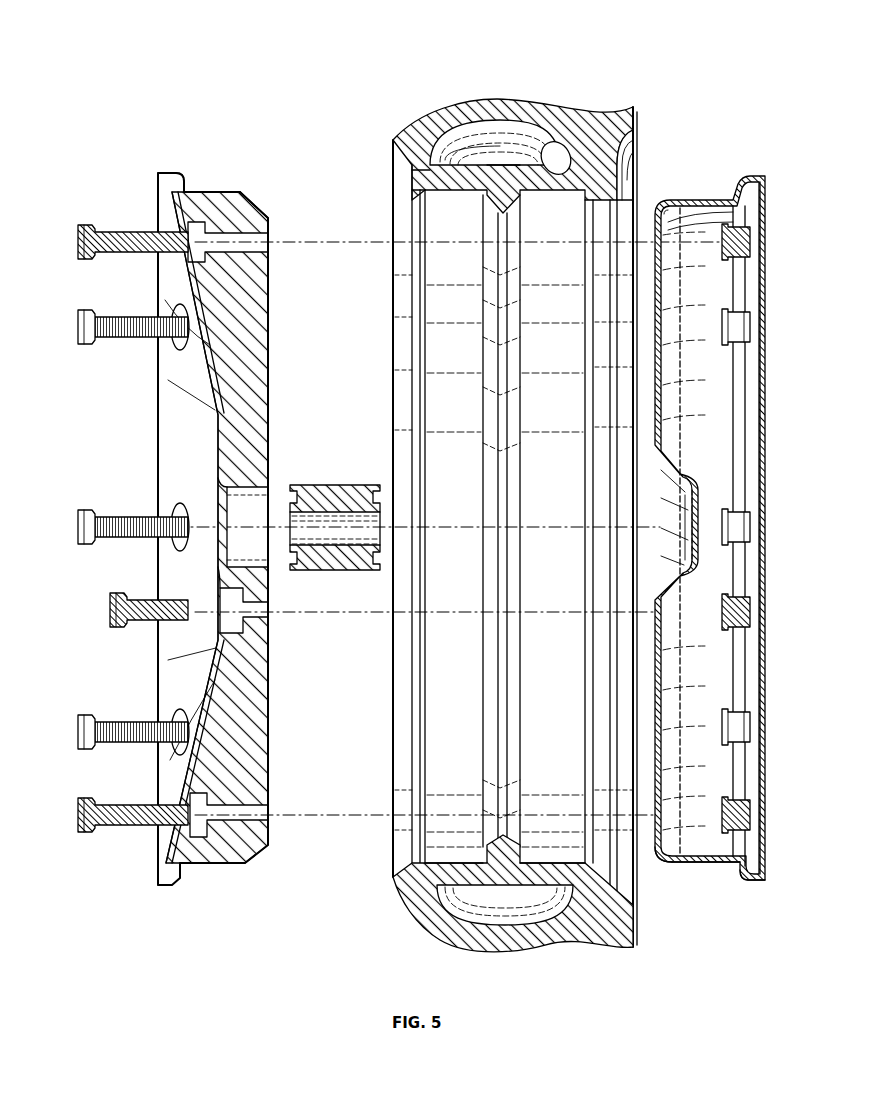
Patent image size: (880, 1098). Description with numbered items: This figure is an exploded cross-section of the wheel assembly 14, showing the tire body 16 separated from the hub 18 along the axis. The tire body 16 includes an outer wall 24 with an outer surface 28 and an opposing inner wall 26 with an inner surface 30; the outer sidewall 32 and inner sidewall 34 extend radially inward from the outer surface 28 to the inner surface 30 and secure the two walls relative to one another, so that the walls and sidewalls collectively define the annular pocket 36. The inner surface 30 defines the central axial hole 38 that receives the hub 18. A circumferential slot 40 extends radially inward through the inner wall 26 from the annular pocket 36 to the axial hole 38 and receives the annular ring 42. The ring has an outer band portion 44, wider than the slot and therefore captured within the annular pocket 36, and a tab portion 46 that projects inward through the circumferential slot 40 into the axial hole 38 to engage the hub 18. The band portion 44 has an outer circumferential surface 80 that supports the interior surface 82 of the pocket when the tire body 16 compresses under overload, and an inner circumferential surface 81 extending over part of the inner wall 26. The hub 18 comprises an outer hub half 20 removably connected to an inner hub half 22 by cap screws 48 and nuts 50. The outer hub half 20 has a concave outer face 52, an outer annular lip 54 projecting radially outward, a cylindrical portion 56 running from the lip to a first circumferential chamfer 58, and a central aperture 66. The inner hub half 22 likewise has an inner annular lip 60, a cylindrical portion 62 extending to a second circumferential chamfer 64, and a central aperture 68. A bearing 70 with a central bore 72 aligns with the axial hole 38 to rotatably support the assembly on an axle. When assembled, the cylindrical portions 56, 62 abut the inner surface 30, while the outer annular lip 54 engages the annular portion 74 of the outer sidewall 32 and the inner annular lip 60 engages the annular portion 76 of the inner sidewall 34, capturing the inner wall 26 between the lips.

The wheel assembly 14 is at (178, 52).
The tire body 16 is at (501, 512).
The hub 18 is at (121, 466).
The outer hub half 20 is at (206, 520).
The inner hub half 22 is at (707, 539).
The outer wall 24 is at (507, 160).
The inner wall 26 is at (418, 227).
The outer surface 28 is at (546, 107).
The inner surface 30 is at (413, 207).
The outer sidewall 32 is at (403, 157).
The inner sidewall 34 is at (634, 140).
The annular pocket 36 is at (468, 132).
The axial hole 38 is at (456, 525).
The circumferential slot 40 is at (510, 893).
The annular ring 42 is at (503, 160).
The outer band portion 44 is at (420, 898).
The tab portion 46 is at (420, 855).
The cap screws 48 is at (110, 232).
The nuts 50 is at (726, 262).
The outer face 52 is at (207, 468).
The outer annular lip 54 is at (162, 182).
The cylindrical portion 56 is at (201, 192).
The first circumferential chamfer 58 is at (258, 210).
The inner annular lip 60 is at (758, 883).
The cylindrical portion 62 is at (714, 864).
The second circumferential chamfer 64 is at (664, 850).
The central aperture 66 is at (216, 553).
The central aperture 68 is at (697, 507).
The bearing 70 is at (335, 510).
The central bore 72 is at (325, 540).
The annular portion 74 is at (417, 186).
The annular portion 76 is at (619, 183).
The outer circumferential surface 80 is at (473, 138).
The inner circumferential surface 81 is at (545, 160).
The interior surface 82 is at (417, 165).